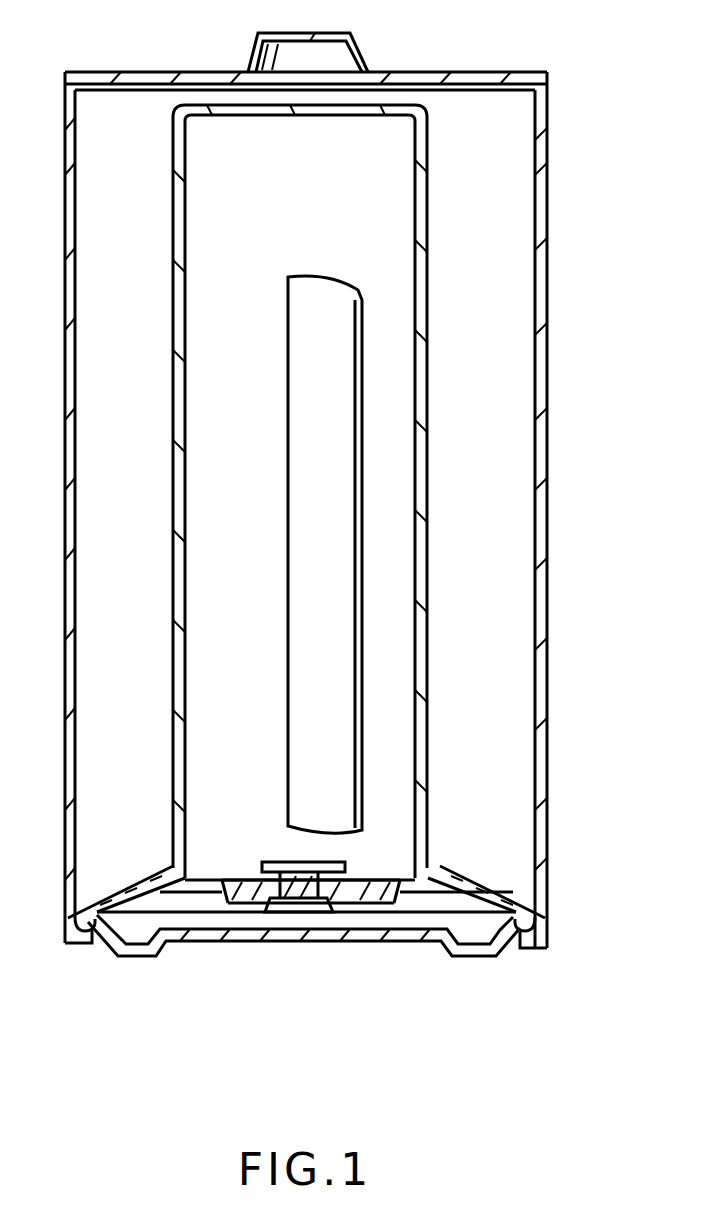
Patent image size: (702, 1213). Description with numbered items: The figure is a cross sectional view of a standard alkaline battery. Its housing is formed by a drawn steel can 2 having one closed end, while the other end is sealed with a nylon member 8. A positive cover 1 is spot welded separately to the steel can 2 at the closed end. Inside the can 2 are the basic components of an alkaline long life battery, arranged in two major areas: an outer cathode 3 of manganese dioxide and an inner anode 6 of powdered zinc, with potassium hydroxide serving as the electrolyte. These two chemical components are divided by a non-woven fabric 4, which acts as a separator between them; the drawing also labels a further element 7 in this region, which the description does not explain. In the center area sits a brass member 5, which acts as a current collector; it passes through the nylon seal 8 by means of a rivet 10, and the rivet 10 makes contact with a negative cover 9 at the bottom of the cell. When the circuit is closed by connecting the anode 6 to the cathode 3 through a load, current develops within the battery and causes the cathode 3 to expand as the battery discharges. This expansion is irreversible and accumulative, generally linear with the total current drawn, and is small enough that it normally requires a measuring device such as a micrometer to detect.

The positive cover 1 is at (357, 50).
The steel can 2 is at (543, 168).
The cathode 3 is at (522, 257).
The non-woven fabric 4 is at (415, 199).
The brass member 5 is at (292, 479).
The anode 6 is at (192, 626).
The separator bottom 7 is at (405, 579).
The nylon member 8 is at (486, 890).
The negative cover 9 is at (497, 947).
The rivet 10 is at (282, 862).